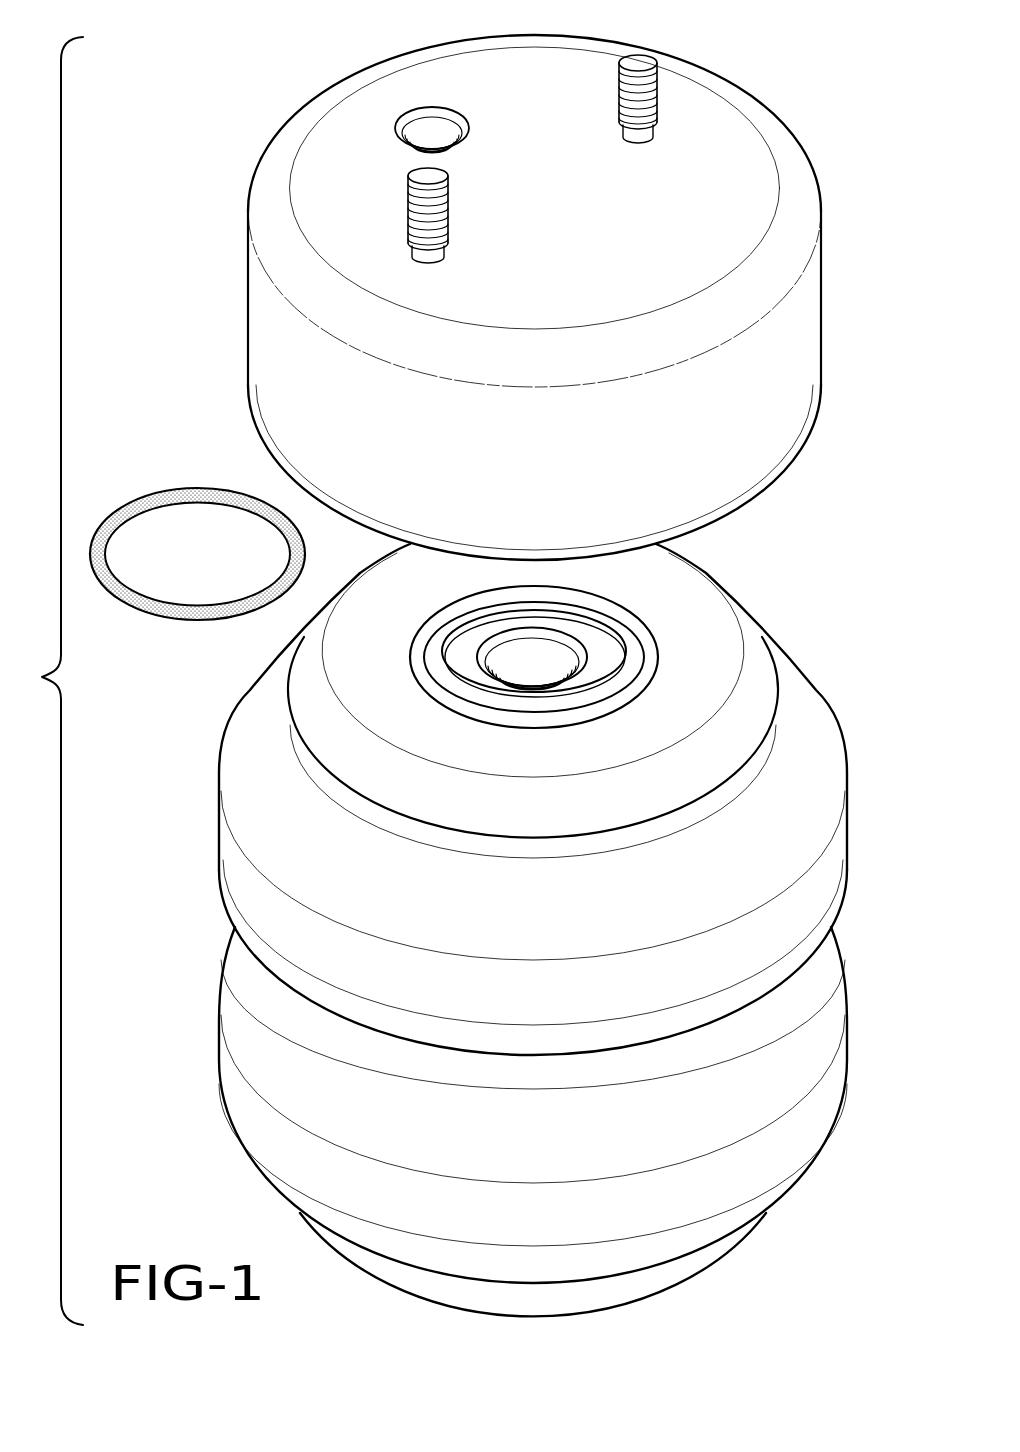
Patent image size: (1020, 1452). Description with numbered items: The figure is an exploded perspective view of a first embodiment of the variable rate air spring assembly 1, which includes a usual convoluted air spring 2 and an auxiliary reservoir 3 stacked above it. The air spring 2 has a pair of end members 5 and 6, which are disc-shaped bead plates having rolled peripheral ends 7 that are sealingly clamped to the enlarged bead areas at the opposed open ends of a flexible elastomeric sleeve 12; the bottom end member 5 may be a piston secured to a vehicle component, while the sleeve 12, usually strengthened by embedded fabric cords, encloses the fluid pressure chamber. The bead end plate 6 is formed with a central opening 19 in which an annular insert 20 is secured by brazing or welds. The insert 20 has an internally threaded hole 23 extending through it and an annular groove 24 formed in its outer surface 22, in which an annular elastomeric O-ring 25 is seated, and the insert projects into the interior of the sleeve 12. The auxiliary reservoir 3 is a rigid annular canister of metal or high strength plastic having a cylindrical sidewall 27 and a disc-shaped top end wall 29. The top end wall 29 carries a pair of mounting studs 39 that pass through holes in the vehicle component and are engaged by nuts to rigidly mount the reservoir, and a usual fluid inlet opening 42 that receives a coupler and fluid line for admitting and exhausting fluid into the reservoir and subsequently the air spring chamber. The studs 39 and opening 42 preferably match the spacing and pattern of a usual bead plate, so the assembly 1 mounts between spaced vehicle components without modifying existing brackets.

The air spring assembly 1 is at (226, 110).
The convoluted air spring 2 is at (498, 933).
The auxiliary reservoir 3 is at (492, 291).
The bottom end member 5 is at (713, 1273).
The bead end plate 6 is at (498, 933).
The rolled peripheral ends 7 is at (748, 626).
The flexible elastomeric sleeve 12 is at (236, 752).
The central opening 19 is at (643, 677).
The annular insert 20 is at (577, 650).
The outer surface 22 is at (647, 652).
The internally threaded hole 23 is at (518, 657).
The annular groove 24 is at (440, 656).
The O-ring 25 is at (190, 492).
The cylindrical sidewall 27 is at (272, 340).
The top end wall 29 is at (716, 136).
The mounting studs 39 is at (641, 62).
The fluid inlet opening 42 is at (416, 130).